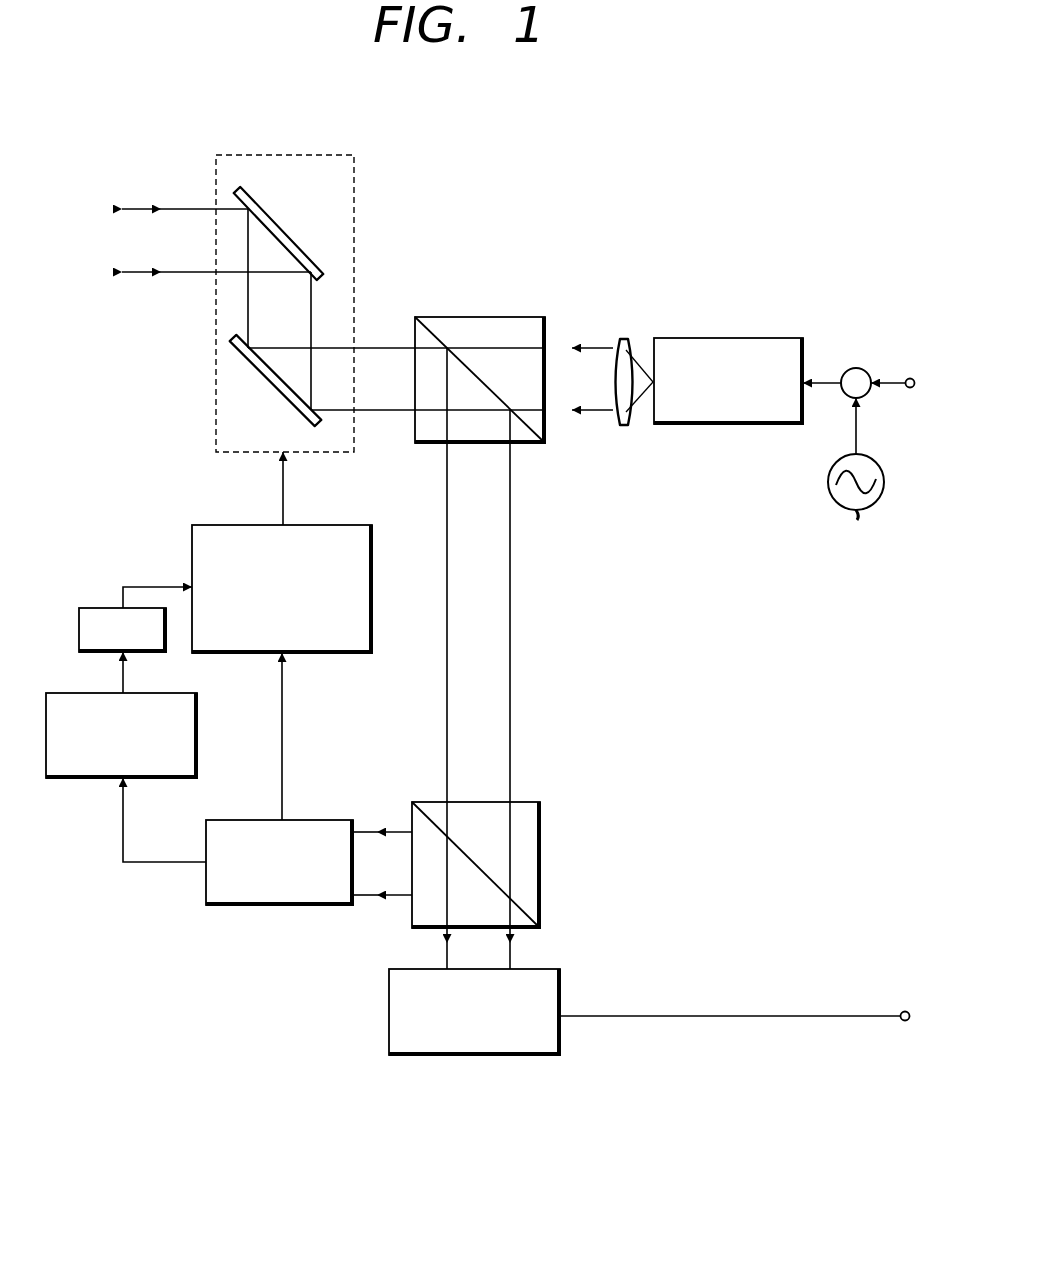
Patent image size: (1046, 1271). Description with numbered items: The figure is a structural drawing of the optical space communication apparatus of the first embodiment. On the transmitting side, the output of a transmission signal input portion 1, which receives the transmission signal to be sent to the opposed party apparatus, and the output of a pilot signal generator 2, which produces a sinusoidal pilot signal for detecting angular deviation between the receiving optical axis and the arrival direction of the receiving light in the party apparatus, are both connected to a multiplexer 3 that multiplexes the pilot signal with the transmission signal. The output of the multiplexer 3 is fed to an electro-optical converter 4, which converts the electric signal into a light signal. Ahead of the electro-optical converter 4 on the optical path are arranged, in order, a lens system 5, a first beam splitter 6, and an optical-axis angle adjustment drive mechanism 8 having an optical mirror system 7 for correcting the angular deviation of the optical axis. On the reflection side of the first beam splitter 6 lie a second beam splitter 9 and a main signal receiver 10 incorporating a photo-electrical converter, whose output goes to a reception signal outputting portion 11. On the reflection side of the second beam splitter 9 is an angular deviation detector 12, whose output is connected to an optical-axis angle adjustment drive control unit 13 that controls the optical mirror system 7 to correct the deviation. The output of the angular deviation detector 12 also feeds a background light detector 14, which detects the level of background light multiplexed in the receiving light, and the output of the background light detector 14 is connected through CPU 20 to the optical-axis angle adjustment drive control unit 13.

The transmission signal input portion 1 is at (909, 378).
The pilot signal generator 2 is at (852, 510).
The multiplexer 3 is at (857, 368).
The electro-optical converter 4 is at (755, 338).
The lens system 5 is at (623, 338).
The first beam splitter 6 is at (507, 317).
The optical mirror system 7 is at (291, 236).
The optical-axis angle adjustment drive mechanism 8 is at (289, 288).
The second beam splitter 9 is at (540, 815).
The main signal receiver 10 is at (401, 1055).
The reception signal outputting portion 11 is at (903, 1022).
The angular deviation detector 12 is at (236, 905).
The optical-axis angle adjustment drive control unit 13 is at (192, 542).
The background light detector 14 is at (90, 693).
The CPU 20 is at (95, 608).